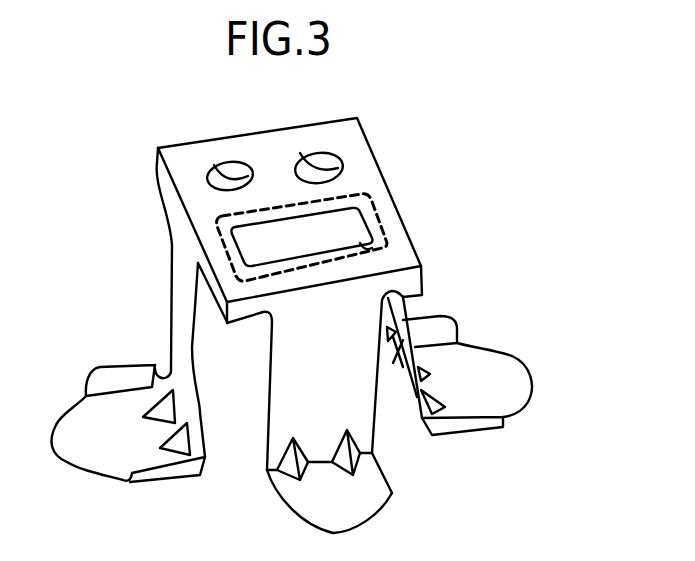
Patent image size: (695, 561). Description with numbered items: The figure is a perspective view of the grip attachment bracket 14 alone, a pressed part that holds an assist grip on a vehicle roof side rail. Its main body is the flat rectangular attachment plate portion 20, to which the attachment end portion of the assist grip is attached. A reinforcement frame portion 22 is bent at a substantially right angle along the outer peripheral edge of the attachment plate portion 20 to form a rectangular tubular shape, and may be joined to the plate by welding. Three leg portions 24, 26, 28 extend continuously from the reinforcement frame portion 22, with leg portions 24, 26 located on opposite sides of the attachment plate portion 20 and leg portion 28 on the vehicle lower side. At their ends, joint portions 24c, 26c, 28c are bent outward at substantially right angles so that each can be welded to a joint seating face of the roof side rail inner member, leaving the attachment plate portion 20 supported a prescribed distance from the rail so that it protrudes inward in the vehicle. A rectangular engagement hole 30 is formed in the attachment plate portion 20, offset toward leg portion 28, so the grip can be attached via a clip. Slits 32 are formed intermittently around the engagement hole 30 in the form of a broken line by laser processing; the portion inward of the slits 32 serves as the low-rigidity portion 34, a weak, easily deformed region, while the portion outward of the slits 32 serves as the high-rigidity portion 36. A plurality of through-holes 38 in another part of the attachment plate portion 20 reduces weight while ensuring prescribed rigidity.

The grip attachment bracket 14 is at (463, 172).
The attachment plate portion 20 is at (363, 158).
The reinforcement frame portion 22 is at (240, 313).
The leg portion 24 is at (178, 320).
The joint portion 24c is at (90, 443).
The leg portion 26 is at (403, 340).
The joint portion 26c is at (495, 377).
The leg portion 28 is at (285, 417).
The joint portion 28c is at (367, 505).
The engagement hole 30 is at (374, 256).
The slits 32 is at (206, 230).
The low-rigidity portion 34 is at (370, 209).
The high-rigidity portion 36 is at (218, 255).
The through-holes 38 is at (226, 165).